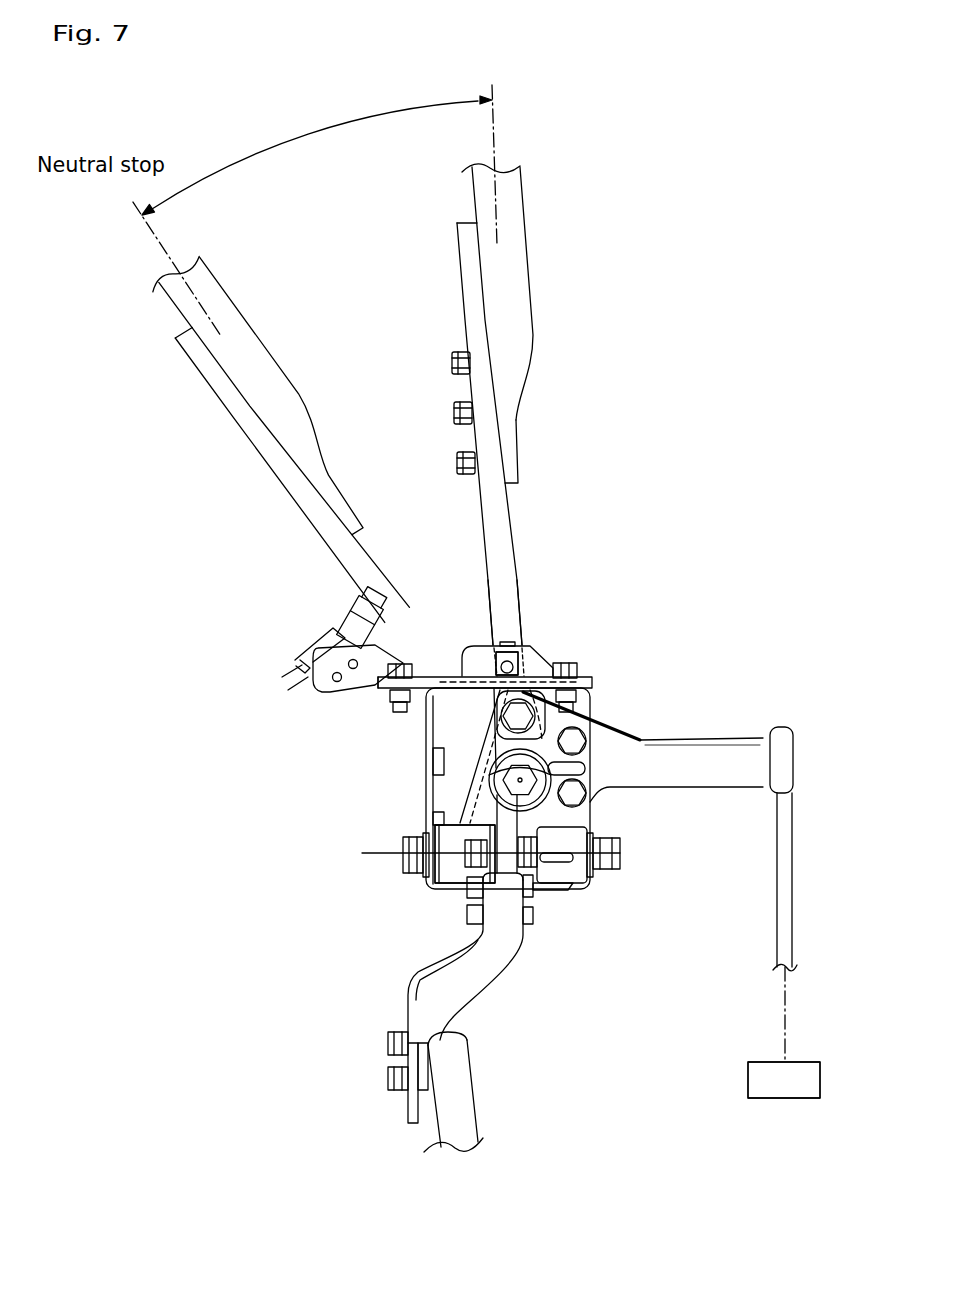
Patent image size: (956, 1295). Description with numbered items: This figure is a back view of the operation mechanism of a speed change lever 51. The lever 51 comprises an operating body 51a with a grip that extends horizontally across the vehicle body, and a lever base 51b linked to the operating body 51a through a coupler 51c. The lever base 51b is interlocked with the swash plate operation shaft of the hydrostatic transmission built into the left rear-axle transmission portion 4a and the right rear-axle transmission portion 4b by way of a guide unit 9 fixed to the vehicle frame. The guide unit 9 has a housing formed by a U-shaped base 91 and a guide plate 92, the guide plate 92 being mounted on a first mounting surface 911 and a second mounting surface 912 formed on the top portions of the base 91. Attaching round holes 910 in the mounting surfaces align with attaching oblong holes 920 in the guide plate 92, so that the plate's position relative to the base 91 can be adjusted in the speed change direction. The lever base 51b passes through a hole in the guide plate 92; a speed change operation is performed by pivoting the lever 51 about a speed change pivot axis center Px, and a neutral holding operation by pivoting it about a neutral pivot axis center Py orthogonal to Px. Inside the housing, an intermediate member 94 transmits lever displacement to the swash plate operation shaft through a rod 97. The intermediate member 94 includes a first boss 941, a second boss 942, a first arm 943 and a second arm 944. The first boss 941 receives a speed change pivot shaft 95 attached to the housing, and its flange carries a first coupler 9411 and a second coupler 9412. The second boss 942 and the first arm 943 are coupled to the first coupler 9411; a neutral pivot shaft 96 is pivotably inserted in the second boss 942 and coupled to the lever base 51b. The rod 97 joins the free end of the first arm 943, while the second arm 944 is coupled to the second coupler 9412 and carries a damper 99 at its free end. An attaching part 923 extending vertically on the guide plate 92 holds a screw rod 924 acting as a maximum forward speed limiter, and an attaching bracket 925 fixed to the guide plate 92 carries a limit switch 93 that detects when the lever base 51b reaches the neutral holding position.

The speed change lever 51 is at (559, 260).
The operating body 51a is at (512, 185).
The lever base 51b is at (517, 612).
The coupler 51c is at (508, 440).
The guide unit 9 is at (627, 669).
The base 91 is at (426, 785).
The guide plate 92 is at (452, 660).
The limit switch 93 is at (360, 613).
The intermediate member 94 is at (392, 1002).
The speed change pivot shaft 95 is at (622, 866).
The neutral pivot shaft 96 is at (590, 800).
The rod 97 is at (775, 912).
The damper 99 is at (465, 1105).
The attaching round hole 910 is at (397, 714).
The first mounting surface 911 is at (600, 688).
The second mounting surface 912 is at (383, 696).
The attaching oblong hole 920 is at (402, 662).
The attaching part 923 is at (535, 662).
The screw rod 924 is at (505, 643).
The attaching bracket 925 is at (330, 655).
The first boss 941 is at (452, 872).
The second boss 942 is at (437, 762).
The first arm 943 is at (676, 780).
The second arm 944 is at (476, 972).
The first coupler 9411 is at (442, 808).
The second coupler 9412 is at (511, 868).
The speed change pivot axis center Px is at (620, 853).
The neutral pivot axis center Py is at (505, 778).
The left rear-axle transmission portion 4a is at (748, 1082).
The right rear-axle transmission portion 4b is at (784, 1080).